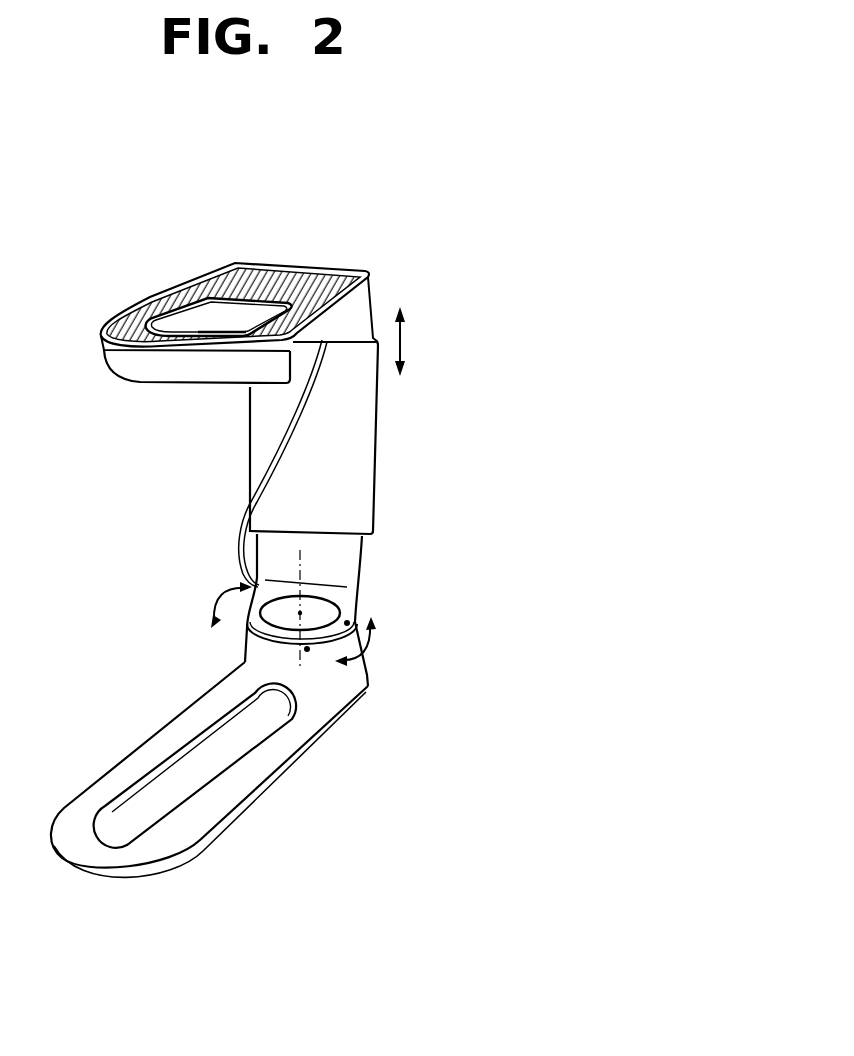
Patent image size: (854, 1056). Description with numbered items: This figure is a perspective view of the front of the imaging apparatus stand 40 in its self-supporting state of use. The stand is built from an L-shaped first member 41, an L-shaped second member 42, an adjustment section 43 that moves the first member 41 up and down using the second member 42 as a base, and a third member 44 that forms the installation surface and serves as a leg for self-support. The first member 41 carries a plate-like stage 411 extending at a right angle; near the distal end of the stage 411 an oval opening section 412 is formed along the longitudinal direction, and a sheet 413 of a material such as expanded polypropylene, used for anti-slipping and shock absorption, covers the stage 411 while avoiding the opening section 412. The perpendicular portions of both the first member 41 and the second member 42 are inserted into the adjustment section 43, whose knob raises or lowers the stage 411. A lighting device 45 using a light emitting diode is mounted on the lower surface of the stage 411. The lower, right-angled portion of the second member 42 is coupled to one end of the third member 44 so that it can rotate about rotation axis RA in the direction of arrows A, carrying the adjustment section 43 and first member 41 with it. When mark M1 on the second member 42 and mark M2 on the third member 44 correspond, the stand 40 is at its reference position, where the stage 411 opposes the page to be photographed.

The imaging apparatus stand 40 is at (402, 156).
The first member 41 is at (385, 296).
The stage 411 is at (322, 282).
The opening section 412 is at (217, 308).
The sheet 413 is at (267, 273).
The second member 42 is at (368, 558).
The adjustment section 43 is at (374, 443).
The third member 44 is at (330, 720).
The lighting device 45 is at (138, 377).
The rotation axis RA is at (297, 577).
The mark M1 is at (347, 623).
The mark M2 is at (308, 650).
The arrows A is at (296, 618).